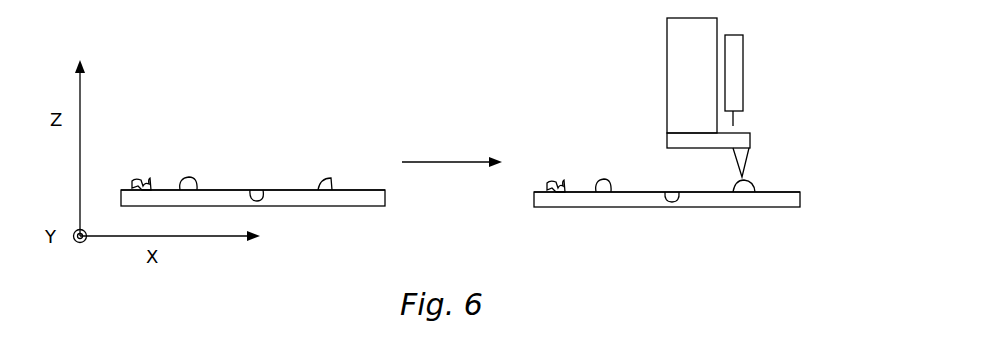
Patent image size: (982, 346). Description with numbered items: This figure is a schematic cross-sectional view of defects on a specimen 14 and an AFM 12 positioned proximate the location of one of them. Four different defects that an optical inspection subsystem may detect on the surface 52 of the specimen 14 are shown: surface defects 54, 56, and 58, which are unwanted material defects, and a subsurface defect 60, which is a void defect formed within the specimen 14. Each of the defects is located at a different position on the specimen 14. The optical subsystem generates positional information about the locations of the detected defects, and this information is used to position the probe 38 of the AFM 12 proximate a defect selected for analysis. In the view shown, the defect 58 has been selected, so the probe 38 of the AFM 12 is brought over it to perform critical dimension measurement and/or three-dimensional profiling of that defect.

The AFM 12 is at (651, 94).
The specimen 14 is at (385, 202).
The probe 38 is at (749, 158).
The surface 52 is at (377, 190).
The surface defect 54 is at (150, 178).
The surface defect 56 is at (195, 178).
The surface defect 58 is at (330, 180).
The subsurface defect 60 is at (260, 188).